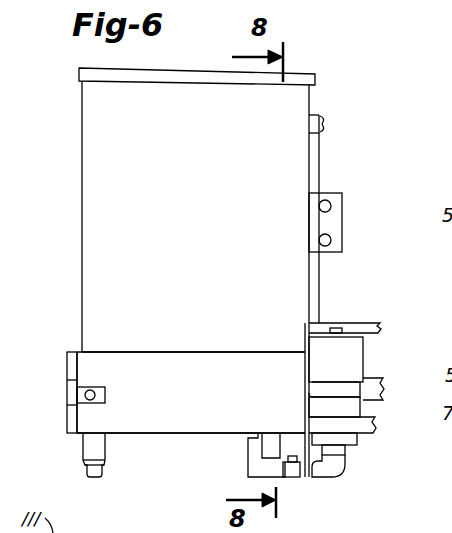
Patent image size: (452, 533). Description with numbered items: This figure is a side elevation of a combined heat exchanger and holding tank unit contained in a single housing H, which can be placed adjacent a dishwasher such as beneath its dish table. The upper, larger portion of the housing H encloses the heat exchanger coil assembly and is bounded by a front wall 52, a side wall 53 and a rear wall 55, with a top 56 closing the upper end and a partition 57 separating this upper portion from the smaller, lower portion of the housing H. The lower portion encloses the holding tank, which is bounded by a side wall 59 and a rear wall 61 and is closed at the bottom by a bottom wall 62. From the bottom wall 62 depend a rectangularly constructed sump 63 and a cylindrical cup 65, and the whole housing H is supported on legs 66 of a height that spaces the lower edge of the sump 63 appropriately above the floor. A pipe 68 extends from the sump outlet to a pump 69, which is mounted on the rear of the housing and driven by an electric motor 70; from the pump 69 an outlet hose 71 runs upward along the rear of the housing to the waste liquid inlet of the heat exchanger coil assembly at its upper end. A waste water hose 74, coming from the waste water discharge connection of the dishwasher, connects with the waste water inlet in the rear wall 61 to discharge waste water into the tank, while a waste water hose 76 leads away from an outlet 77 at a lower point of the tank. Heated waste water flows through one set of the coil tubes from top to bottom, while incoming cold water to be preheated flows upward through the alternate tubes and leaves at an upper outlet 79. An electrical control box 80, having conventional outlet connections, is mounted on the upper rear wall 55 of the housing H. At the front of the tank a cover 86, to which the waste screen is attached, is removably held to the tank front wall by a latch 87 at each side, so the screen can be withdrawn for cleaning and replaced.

The front wall 52 is at (82, 157).
The side wall 53 is at (208, 172).
The rear wall 55 is at (310, 108).
The top 56 is at (317, 79).
The partition 57 is at (228, 352).
The side wall 59 is at (203, 412).
The rear wall 61 is at (305, 365).
The bottom wall 62 is at (122, 435).
The sump 63 is at (251, 440).
The cylindrical cup 65 is at (268, 438).
The legs 66 is at (90, 453).
The pipe 68 is at (345, 458).
The pump 69 is at (360, 412).
The electric motor 70 is at (363, 348).
The outlet hose 71 is at (318, 162).
The waste water hose 74 is at (371, 378).
The waste water hose 76 is at (366, 440).
The outlet 77 is at (362, 323).
The upper outlet 79 is at (323, 122).
The electrical control box 80 is at (343, 207).
The cover 86 is at (67, 367).
The latch 87 is at (92, 386).
The housing H is at (72, 226).